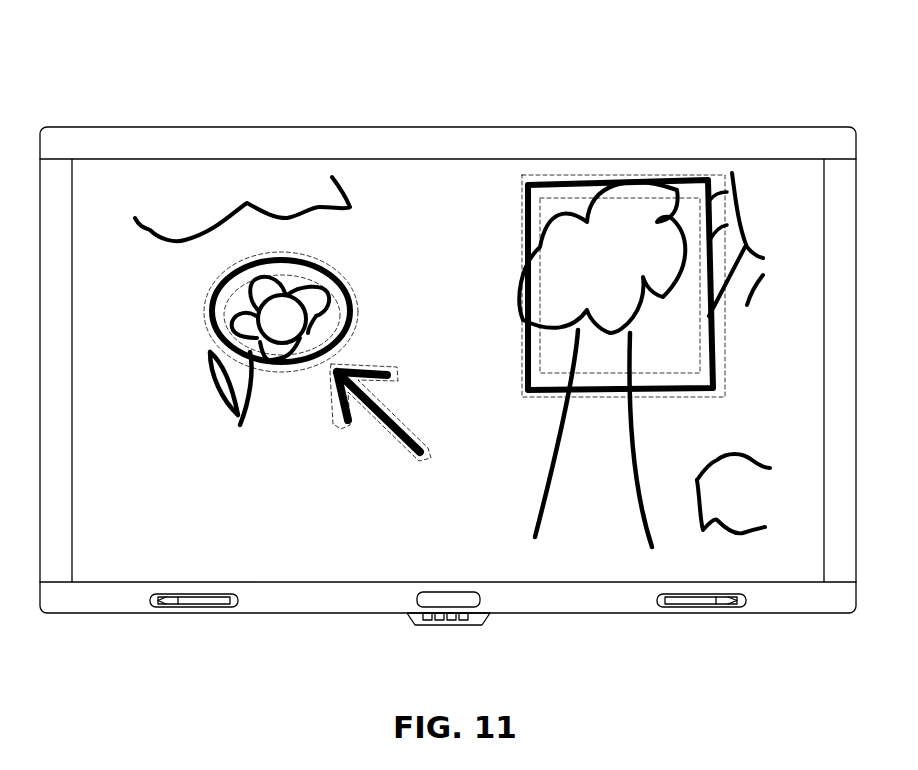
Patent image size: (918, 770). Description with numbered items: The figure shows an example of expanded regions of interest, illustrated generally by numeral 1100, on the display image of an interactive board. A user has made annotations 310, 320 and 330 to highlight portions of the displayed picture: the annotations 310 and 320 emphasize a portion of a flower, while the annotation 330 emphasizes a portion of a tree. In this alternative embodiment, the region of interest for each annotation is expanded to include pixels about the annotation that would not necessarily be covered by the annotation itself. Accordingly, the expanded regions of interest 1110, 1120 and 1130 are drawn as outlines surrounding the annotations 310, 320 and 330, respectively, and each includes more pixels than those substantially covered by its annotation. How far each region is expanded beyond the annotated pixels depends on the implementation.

The example of expanded regions of interest 1100 is at (733, 94).
The expanded region of interest 1110 is at (204, 316).
The annotation 310 is at (342, 282).
The expanded region of interest 1120 is at (334, 424).
The annotation 320 is at (396, 392).
The expanded region of interest 1130 is at (509, 307).
The annotation 330 is at (523, 345).